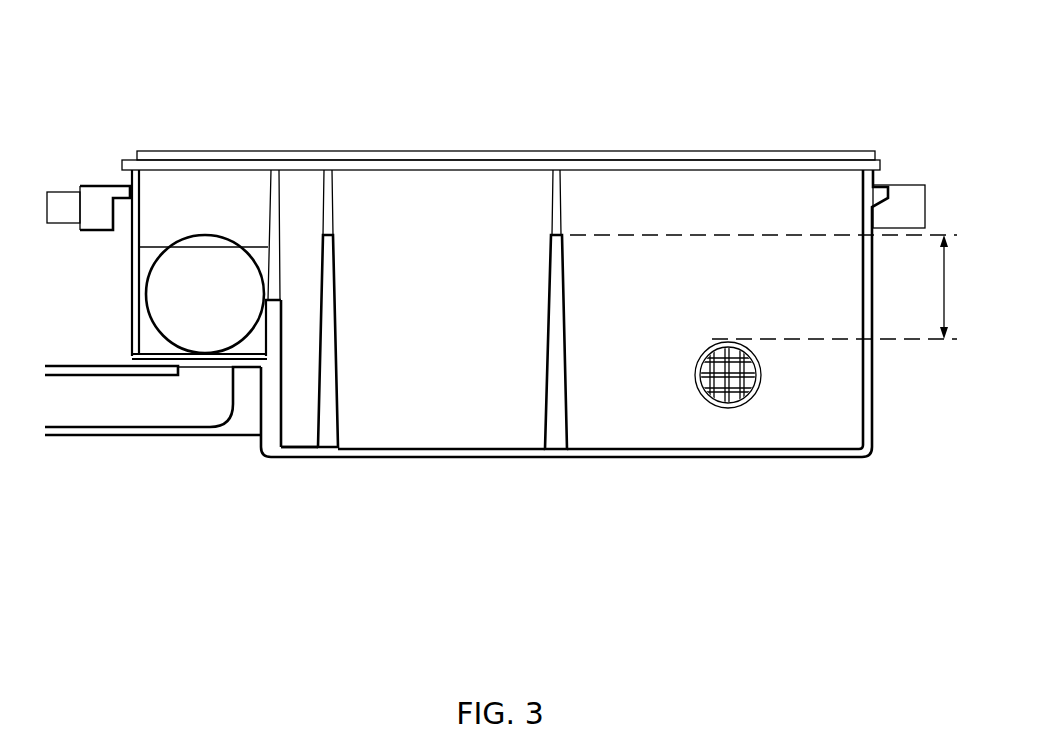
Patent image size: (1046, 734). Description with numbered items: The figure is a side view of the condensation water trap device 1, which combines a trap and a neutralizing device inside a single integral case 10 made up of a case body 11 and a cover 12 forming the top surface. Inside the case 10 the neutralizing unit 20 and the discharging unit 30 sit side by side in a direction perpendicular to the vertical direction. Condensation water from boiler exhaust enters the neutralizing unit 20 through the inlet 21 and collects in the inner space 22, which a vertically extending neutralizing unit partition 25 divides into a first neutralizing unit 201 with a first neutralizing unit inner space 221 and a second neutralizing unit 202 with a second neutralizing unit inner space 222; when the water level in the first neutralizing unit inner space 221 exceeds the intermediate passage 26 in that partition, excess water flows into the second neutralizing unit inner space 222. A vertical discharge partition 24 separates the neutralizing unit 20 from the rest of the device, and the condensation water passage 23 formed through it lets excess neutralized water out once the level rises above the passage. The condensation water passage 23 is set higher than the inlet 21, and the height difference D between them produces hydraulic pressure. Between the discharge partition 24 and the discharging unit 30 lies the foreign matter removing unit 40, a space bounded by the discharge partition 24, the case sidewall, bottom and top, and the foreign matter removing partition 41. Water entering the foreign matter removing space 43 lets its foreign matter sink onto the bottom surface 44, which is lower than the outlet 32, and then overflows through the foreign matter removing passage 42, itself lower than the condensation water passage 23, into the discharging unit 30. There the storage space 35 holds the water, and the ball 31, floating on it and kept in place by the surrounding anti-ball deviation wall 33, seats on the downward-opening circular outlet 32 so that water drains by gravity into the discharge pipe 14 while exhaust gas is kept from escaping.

The condensation water trap device 1 is at (476, 584).
The case 10 is at (881, 386).
The case body 11 is at (866, 424).
The cover 12 is at (808, 151).
The discharge pipe 14 is at (79, 436).
The neutralizing unit 20 is at (647, 58).
The first neutralizing unit 201 is at (686, 268).
The second neutralizing unit 202 is at (444, 268).
The inlet 21 is at (733, 406).
The inner space 22 is at (645, 512).
The first neutralizing unit inner space 221 is at (650, 384).
The second neutralizing unit inner space 222 is at (480, 382).
The condensation water passage 23 is at (327, 177).
The discharge partition 24 is at (333, 270).
The neutralizing unit partition 25 is at (558, 272).
The intermediate passage 26 is at (555, 183).
The discharging unit 30 is at (171, 190).
The ball 31 is at (209, 236).
The outlet 32 is at (205, 363).
The anti-ball deviation wall 33 is at (152, 238).
The storage space 35 is at (247, 203).
The foreign matter removing unit 40 is at (293, 427).
The foreign matter removing partition 41 is at (283, 313).
The foreign matter removing passage 42 is at (273, 208).
The foreign matter removing space 43 is at (300, 363).
The bottom surface of the foreign matter removing space 44 is at (308, 444).
The height difference D is at (765, 287).